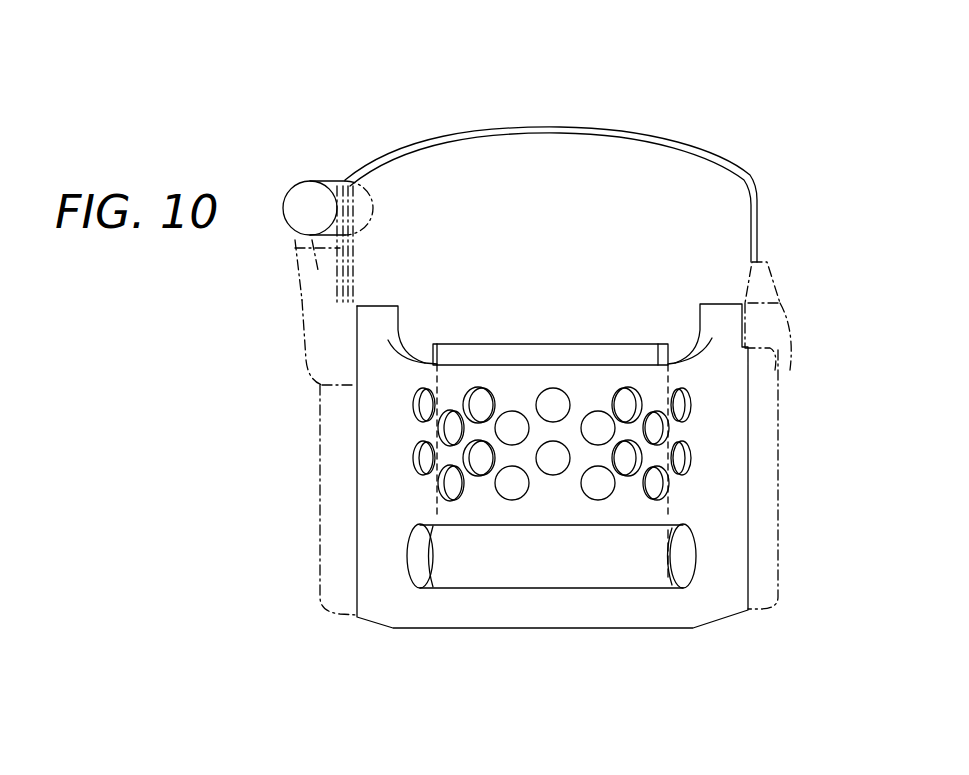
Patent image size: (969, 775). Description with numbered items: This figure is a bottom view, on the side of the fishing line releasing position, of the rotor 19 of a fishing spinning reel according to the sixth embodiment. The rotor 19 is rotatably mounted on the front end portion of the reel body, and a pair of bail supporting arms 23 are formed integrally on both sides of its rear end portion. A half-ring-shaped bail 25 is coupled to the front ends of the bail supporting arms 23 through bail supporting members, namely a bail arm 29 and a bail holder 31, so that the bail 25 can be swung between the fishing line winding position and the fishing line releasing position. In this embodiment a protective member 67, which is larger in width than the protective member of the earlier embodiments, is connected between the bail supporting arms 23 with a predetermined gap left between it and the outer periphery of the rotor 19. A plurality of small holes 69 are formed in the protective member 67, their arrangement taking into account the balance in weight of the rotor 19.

The rotor 19 is at (598, 355).
The bail supporting arms 23 is at (333, 510).
The bail 25 is at (624, 130).
The bail arm 29 is at (318, 263).
The bail holder 31 is at (775, 303).
The protective member 67 is at (557, 517).
The small holes 69 is at (551, 400).